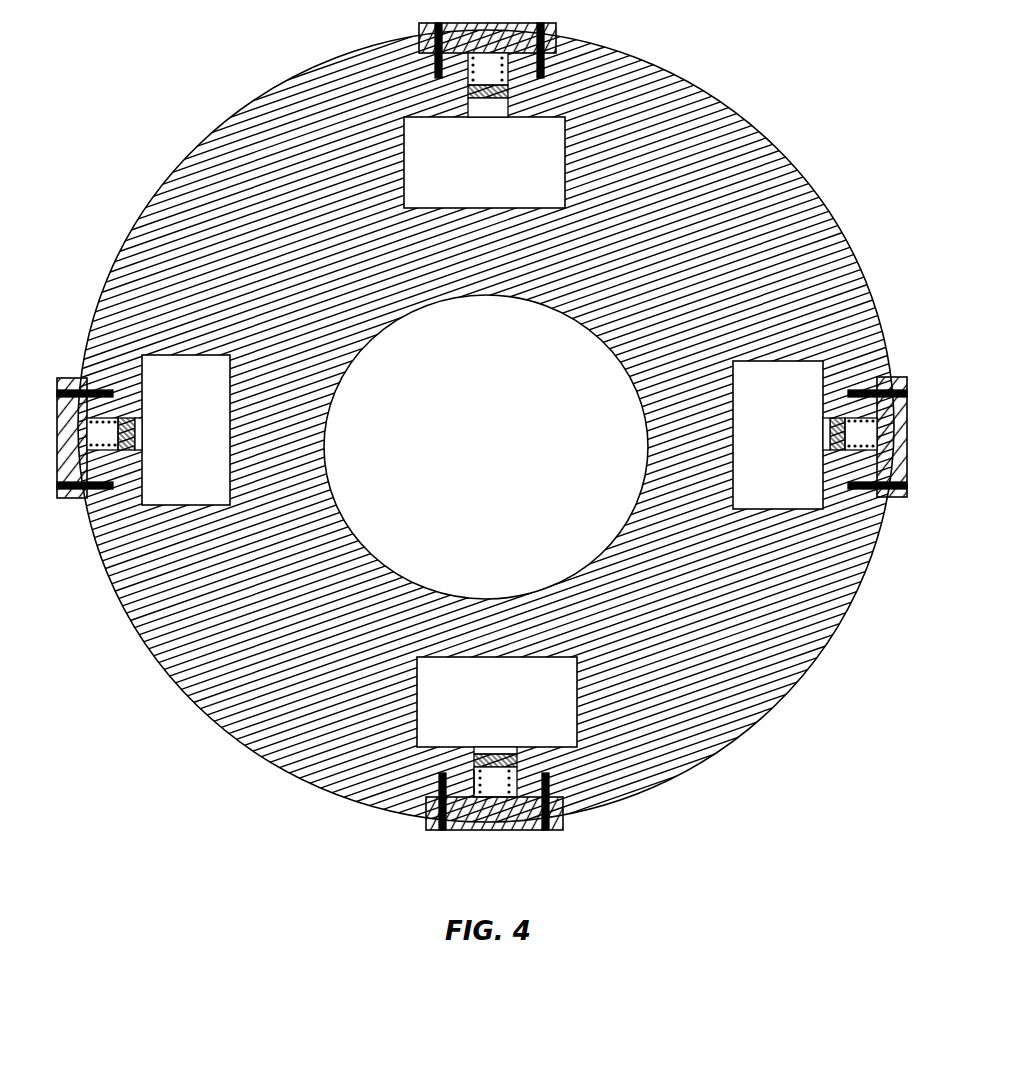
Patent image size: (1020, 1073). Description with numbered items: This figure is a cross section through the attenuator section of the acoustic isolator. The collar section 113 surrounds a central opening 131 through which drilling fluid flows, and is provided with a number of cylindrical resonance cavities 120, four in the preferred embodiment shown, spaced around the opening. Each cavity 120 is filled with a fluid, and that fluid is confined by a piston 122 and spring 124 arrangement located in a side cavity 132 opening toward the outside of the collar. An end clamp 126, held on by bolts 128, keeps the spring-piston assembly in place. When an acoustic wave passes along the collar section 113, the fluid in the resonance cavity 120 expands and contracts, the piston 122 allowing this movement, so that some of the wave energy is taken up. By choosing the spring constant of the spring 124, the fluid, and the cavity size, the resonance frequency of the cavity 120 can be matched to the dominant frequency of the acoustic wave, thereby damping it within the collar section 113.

The collar section 113 is at (742, 678).
The central opening 131 is at (505, 457).
The resonance cavity 120 is at (560, 694).
The piston 122 is at (518, 755).
The spring 124 is at (478, 778).
The end clamp 126 is at (508, 830).
The bolts 128 is at (545, 832).
The side cavity 132 is at (475, 778).